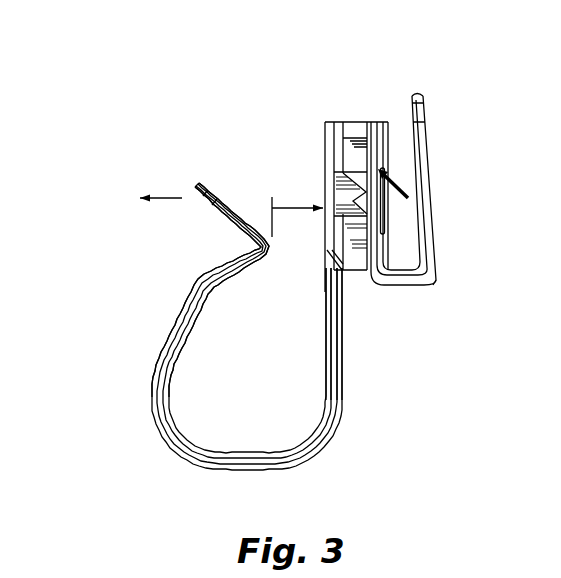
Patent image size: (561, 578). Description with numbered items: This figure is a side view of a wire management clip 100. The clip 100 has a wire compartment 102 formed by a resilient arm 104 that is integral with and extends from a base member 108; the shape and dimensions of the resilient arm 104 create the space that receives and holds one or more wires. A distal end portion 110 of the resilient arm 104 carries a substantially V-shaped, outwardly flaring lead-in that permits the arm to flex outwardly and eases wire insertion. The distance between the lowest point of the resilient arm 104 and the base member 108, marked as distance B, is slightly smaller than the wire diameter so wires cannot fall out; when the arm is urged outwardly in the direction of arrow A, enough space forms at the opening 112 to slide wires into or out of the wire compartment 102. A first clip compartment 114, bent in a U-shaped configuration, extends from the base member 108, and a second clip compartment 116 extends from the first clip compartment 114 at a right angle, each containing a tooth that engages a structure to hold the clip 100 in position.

The clip 100 is at (135, 147).
The wire compartment 102 is at (205, 402).
The resilient arm 104 is at (165, 343).
The base member 108 is at (343, 384).
The distal end portion 110 is at (197, 278).
The opening 112 is at (295, 162).
The first clip compartment 114 is at (358, 138).
The second clip compartment 116 is at (402, 146).